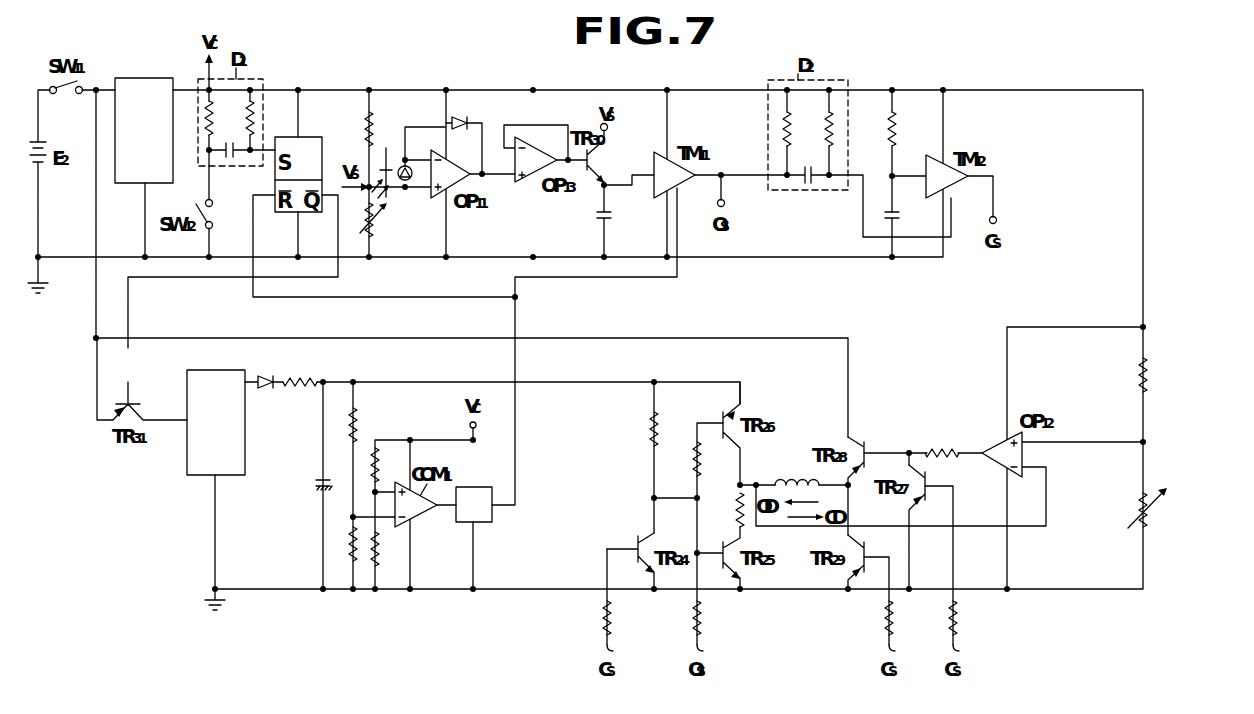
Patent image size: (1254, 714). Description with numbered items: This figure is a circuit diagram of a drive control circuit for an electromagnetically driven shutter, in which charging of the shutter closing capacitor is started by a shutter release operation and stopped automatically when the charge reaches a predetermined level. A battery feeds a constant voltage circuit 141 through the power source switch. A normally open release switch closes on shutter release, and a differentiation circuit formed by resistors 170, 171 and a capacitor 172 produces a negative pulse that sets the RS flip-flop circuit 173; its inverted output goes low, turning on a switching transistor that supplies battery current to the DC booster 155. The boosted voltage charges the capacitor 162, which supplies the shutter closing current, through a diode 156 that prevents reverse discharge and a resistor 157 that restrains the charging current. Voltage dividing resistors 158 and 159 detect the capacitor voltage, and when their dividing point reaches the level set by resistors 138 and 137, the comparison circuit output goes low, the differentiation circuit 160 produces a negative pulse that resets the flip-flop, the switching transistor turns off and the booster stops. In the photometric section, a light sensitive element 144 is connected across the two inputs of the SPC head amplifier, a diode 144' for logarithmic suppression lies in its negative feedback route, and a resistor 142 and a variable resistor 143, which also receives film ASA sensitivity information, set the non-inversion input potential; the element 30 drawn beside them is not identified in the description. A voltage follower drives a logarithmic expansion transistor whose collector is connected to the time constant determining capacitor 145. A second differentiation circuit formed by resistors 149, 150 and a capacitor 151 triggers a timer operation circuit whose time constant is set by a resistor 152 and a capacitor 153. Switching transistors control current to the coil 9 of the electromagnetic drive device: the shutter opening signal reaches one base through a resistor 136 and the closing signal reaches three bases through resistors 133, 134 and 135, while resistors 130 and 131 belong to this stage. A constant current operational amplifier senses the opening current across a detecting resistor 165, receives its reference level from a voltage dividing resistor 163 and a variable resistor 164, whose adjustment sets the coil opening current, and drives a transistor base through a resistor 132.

The constant voltage circuit 141 is at (144, 130).
The resistor 170 is at (224, 120).
The resistor 171 is at (256, 122).
The capacitor 172 is at (231, 158).
The RS flip-flop circuit 173 is at (311, 137).
The resistor 142 is at (383, 129).
The variable resistor 143 is at (386, 220).
The light receiving element 30 is at (380, 180).
The light sensitive element 144 is at (417, 153).
The diode for logarithmic suppression 144' is at (464, 132).
The time constant determining capacitor 145 is at (619, 221).
The resistor 149 is at (780, 132).
The resistor 150 is at (836, 128).
The capacitor 151 is at (809, 184).
The resistor 152 is at (908, 151).
The capacitor 153 is at (908, 229).
The DC booster 155 is at (216, 422).
The diode 156 is at (264, 397).
The resistor 157 is at (303, 369).
The voltage dividing resistor 158 is at (367, 425).
The voltage dividing resistor 159 is at (348, 545).
The capacitor 162 is at (308, 481).
The resistor 138 is at (389, 464).
The resistor 137 is at (389, 549).
The differentiation circuit 160 is at (474, 504).
The resistor 130 is at (638, 429).
The resistor 131 is at (682, 457).
The resistor 165 is at (726, 511).
The coil 9 is at (797, 478).
The resistor 133 is at (622, 626).
The resistor 136 is at (712, 626).
The resistor 135 is at (904, 626).
The resistor 134 is at (968, 626).
The resistor 132 is at (945, 440).
The voltage dividing resistor 163 is at (1160, 375).
The voltage dividing variable resistor 164 is at (1160, 509).